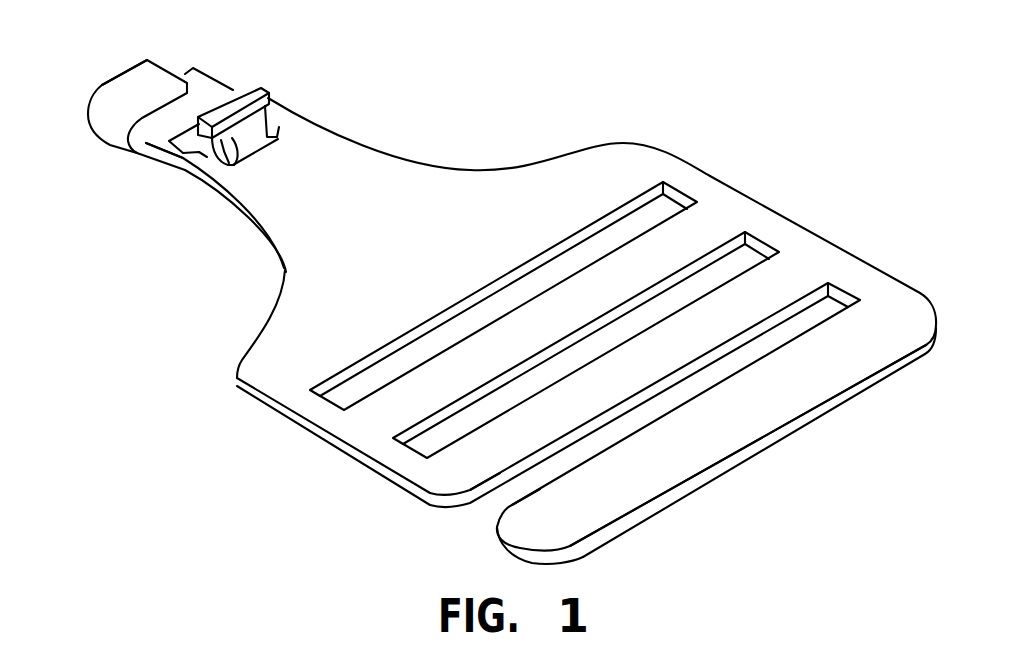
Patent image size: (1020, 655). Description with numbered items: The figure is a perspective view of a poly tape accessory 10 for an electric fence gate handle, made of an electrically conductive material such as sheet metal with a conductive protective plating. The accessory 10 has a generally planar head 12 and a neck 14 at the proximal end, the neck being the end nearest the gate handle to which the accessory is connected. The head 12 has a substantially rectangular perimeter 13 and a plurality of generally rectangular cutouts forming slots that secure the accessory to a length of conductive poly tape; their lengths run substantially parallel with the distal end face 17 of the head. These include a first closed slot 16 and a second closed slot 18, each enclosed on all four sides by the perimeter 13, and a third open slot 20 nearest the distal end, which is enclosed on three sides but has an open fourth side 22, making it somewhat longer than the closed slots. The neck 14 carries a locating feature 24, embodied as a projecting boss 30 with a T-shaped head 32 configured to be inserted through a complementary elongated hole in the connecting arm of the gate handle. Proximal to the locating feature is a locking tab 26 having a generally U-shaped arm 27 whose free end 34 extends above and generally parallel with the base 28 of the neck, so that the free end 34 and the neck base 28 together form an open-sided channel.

The poly tape accessory 10 is at (588, 88).
The head 12 is at (812, 252).
The perimeter 13 is at (340, 462).
The neck 14 is at (392, 163).
The first closed slot 16 is at (677, 195).
The distal end face 17 is at (760, 450).
The second closed slot 18 is at (758, 246).
The third open slot 20 is at (842, 292).
The open fourth side 22 is at (495, 503).
The locating feature 24 is at (292, 96).
The locking tab 26 is at (97, 58).
The U-shaped arm 27 is at (100, 85).
The base 28 is at (218, 82).
The projecting boss 30 is at (230, 140).
The T-shaped head 32 is at (258, 83).
The free end 34 is at (150, 72).